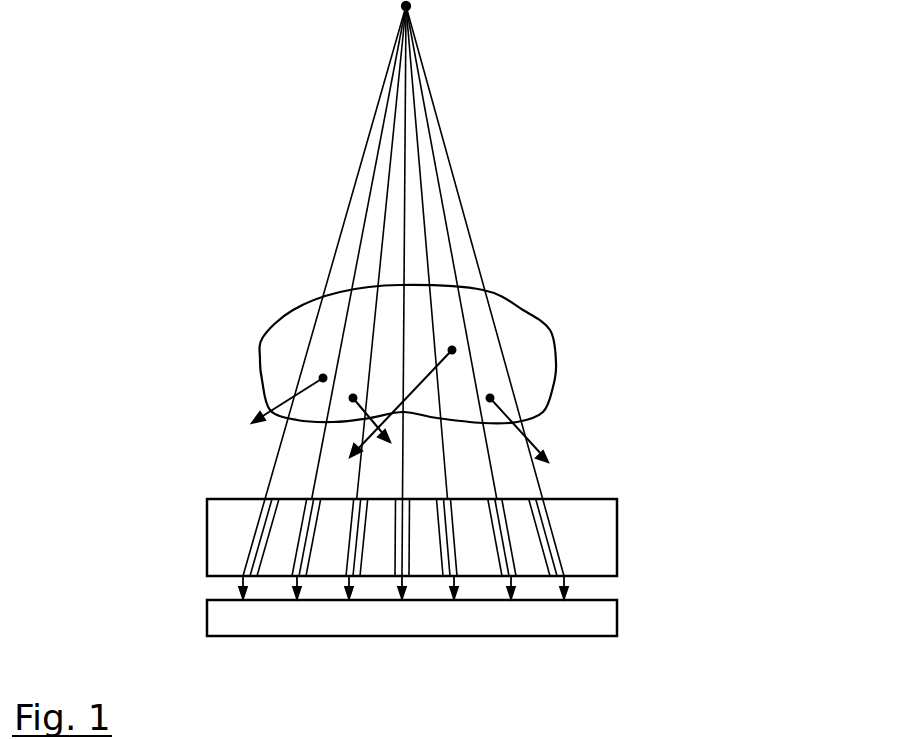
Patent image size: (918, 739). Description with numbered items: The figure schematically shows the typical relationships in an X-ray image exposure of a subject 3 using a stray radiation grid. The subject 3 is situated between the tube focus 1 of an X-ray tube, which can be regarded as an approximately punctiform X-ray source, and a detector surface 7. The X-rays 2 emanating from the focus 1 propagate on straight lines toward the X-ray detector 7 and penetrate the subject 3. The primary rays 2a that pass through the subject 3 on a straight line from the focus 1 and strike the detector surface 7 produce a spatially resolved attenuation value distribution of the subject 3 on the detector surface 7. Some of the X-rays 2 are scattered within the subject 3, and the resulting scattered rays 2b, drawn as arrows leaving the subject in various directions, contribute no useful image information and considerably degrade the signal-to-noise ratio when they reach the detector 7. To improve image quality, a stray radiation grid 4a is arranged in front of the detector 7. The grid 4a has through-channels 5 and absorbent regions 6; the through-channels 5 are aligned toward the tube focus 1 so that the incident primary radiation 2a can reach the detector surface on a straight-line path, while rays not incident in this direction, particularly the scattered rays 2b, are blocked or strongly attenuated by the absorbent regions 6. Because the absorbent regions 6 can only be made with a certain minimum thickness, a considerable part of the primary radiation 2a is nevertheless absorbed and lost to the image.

The tube focus 1 is at (410, 9).
The X-rays 2 is at (437, 160).
The primary rays 2a is at (538, 482).
The scattered rays 2b is at (537, 447).
The subject 3 is at (520, 333).
The stray radiation grid 4a is at (617, 540).
The through-channels 5 is at (260, 495).
The absorbent regions 6 is at (277, 548).
The detector surface 7 is at (600, 620).